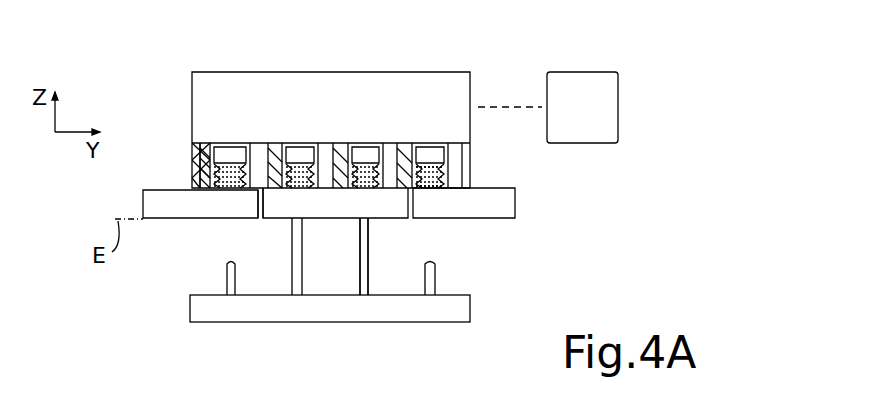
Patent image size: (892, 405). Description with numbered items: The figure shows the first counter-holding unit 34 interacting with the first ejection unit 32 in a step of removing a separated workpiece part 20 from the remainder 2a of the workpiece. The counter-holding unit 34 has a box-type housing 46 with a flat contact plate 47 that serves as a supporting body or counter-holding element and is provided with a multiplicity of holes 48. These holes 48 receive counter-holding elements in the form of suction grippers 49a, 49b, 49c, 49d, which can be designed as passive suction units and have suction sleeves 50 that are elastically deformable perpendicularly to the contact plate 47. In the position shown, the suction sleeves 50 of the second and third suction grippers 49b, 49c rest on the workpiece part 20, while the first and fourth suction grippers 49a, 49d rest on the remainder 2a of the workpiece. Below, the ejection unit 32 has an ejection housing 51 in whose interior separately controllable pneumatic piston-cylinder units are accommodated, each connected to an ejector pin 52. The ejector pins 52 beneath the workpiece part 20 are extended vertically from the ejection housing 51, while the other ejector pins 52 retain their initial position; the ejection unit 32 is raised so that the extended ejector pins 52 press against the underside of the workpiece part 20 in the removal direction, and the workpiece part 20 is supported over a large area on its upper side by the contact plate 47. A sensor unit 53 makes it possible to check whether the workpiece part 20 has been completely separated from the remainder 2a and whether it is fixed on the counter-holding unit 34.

The counter-holding unit 34 is at (180, 79).
The box-type housing 46 is at (460, 78).
The first suction gripper 49a is at (232, 152).
The second suction gripper 49b is at (303, 152).
The third suction gripper 49c is at (365, 152).
The fourth suction gripper 49d is at (438, 152).
The contact plate 47 is at (190, 163).
The holes 48 is at (198, 163).
The suction sleeves 50 is at (444, 174).
The sensor unit 53 is at (585, 78).
The remainder of the workpiece 2a is at (498, 203).
The workpiece part 20 is at (268, 215).
The ejection unit 32 is at (467, 278).
The ejection housing 51 is at (458, 308).
The ejector pins 52 is at (366, 277).